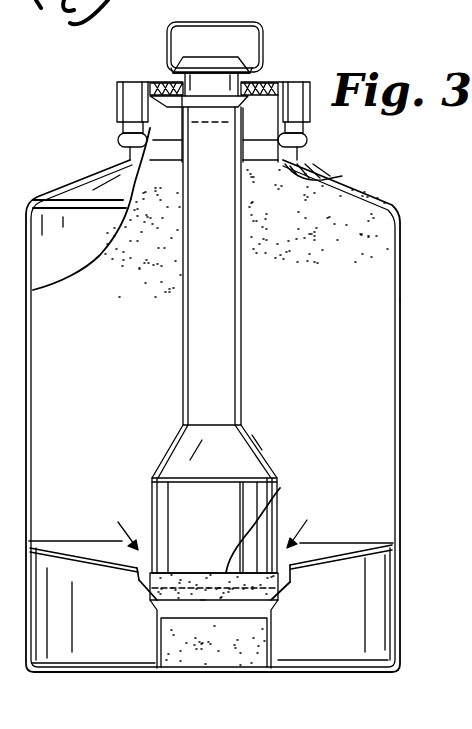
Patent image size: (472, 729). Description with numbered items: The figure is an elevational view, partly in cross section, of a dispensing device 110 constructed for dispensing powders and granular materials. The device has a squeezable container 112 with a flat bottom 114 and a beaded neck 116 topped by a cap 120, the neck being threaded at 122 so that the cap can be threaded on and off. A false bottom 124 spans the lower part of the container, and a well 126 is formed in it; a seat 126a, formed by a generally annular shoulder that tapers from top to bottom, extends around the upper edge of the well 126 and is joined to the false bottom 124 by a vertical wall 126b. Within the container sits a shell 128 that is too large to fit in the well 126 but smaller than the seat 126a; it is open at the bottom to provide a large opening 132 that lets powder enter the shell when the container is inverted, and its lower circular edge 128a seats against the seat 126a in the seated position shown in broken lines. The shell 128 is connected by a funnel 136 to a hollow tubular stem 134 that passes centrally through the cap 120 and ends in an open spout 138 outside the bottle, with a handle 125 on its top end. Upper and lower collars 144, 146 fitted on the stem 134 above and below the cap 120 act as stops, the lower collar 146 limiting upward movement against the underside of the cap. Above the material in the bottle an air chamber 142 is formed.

The dispensing device 110 is at (393, 187).
The container 112 is at (402, 284).
The container bottom 114 is at (386, 672).
The neck bead 116 is at (307, 138).
The cap 120 is at (312, 86).
The threaded portion 122 is at (262, 90).
The false bottom 124 is at (345, 556).
The handle 125 is at (256, 28).
The well 126 is at (272, 652).
The seat 126a is at (154, 598).
The vertical wall 126b is at (140, 577).
The shell 128 is at (263, 492).
The lower circular edge 128a is at (294, 584).
The opening 132 is at (204, 576).
The hollow tubular stem 134 is at (245, 312).
The funnel 136 is at (254, 447).
The open spout 138 is at (212, 57).
The air chamber 142 is at (280, 179).
The upper collar 144 is at (177, 70).
The lower collar 146 is at (182, 98).